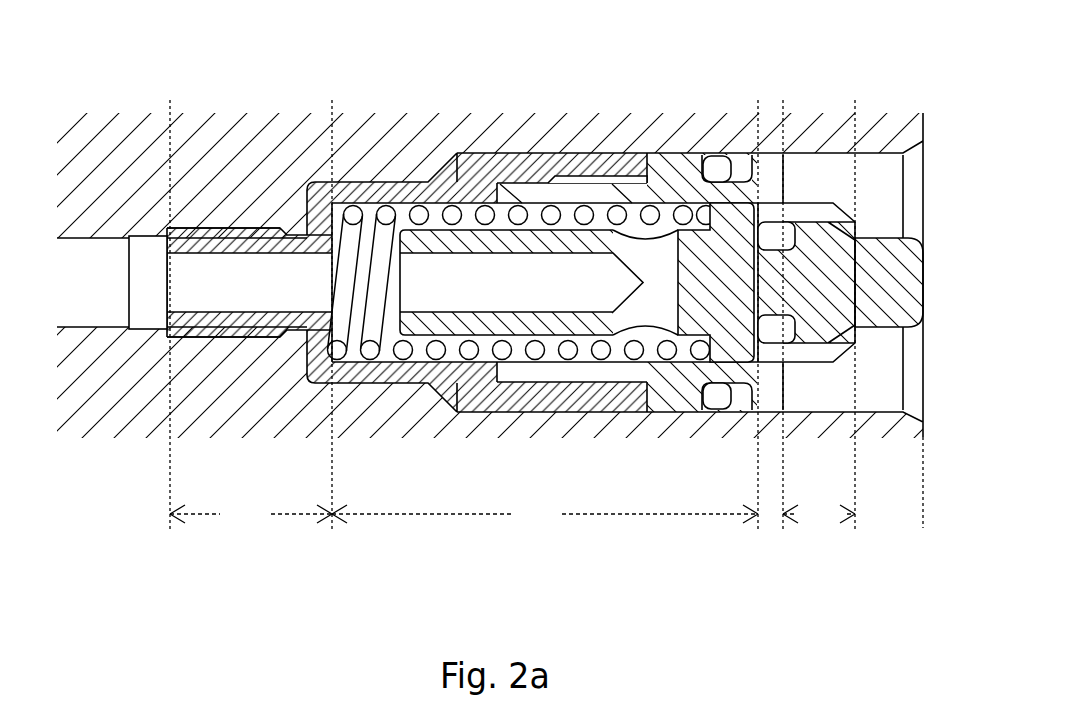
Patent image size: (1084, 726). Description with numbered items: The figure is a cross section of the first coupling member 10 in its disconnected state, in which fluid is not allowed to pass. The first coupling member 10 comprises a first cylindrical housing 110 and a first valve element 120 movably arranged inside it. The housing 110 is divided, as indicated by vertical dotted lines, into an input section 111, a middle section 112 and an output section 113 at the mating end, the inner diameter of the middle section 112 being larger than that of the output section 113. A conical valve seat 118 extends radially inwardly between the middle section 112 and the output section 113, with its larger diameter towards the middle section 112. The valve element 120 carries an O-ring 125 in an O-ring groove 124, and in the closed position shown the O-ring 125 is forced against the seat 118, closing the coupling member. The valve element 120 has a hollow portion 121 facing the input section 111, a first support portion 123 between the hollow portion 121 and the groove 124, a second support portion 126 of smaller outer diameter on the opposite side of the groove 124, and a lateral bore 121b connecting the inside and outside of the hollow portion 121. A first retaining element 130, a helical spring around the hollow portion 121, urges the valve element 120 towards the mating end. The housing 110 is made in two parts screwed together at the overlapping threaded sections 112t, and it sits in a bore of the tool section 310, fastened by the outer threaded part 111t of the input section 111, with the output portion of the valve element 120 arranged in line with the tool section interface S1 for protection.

The first coupling member 10 is at (561, 89).
The first cylindrical housing 110 is at (660, 190).
The input section 111 is at (230, 316).
The outer threaded part 111t is at (197, 228).
The middle section 112 is at (581, 316).
The threaded sections 112t is at (590, 176).
The output section 113 is at (819, 316).
The valve seat 118 is at (762, 217).
The first valve element 120 is at (889, 282).
The hollow portion 121 is at (539, 282).
The lateral bore 121b is at (662, 290).
The first support portion 123 is at (737, 290).
The O-ring groove 124 is at (799, 228).
The O-ring 125 is at (774, 225).
The second support portion 126 is at (818, 290).
The first retaining element 130 is at (387, 205).
The first tool section 310 is at (490, 320).
The first tool section interface S1 is at (926, 560).